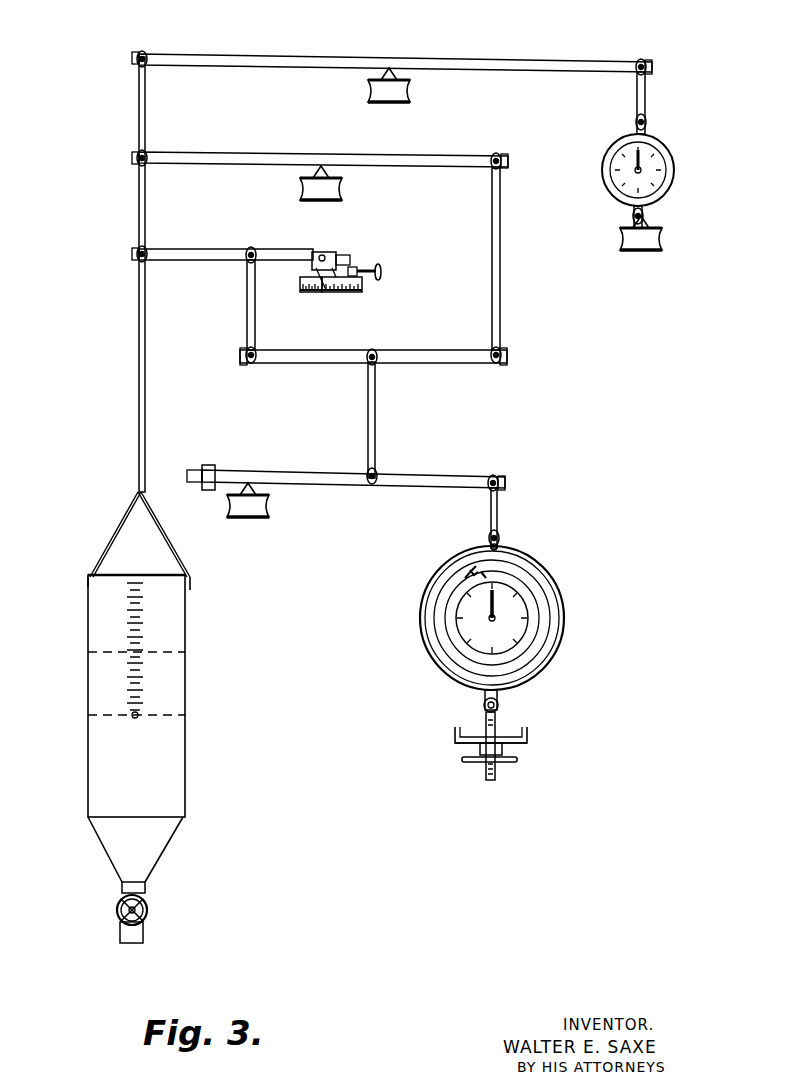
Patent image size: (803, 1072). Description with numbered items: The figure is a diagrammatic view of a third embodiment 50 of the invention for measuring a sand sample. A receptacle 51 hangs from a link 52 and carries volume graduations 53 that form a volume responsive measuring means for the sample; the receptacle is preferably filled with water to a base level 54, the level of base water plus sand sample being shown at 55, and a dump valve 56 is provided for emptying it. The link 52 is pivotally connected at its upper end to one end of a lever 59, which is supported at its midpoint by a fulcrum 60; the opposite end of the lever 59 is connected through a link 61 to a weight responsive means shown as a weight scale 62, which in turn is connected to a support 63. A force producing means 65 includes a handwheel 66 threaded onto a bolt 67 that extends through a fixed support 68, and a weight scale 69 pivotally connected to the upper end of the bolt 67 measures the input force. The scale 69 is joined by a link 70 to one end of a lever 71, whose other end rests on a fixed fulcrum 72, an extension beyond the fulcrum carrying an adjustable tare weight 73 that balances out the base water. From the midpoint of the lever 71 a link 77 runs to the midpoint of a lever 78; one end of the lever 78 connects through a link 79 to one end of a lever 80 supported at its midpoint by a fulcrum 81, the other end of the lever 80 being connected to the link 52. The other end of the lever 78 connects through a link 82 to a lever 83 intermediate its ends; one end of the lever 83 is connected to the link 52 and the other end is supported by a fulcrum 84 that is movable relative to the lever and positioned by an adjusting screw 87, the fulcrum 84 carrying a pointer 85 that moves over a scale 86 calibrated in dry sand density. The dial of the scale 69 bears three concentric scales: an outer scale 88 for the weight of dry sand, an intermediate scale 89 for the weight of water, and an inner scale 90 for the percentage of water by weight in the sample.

The embodiment 50 is at (512, 40).
The receptacle 51 is at (87, 621).
The link 52 is at (137, 385).
The volume graduations 53 is at (122, 676).
The base level 54 is at (168, 717).
The level of base water plus sand sample 55 is at (168, 653).
The dump valve 56 is at (148, 905).
The lever 59 is at (288, 56).
The fulcrum 60 is at (399, 70).
The link 61 is at (645, 100).
The weight scale 62 is at (676, 172).
The support 63 is at (664, 238).
The force producing means 65 is at (449, 764).
The handwheel 66 is at (512, 764).
The bolt 67 is at (488, 782).
The fixed support 68 is at (528, 733).
The weight scale 69 is at (562, 604).
The link 70 is at (498, 500).
The lever 71 is at (340, 486).
The fixed fulcrum 72 is at (252, 484).
The tare weight 73 is at (210, 465).
The link 77 is at (376, 420).
The lever 78 is at (455, 363).
The link 79 is at (500, 266).
The lever 80 is at (402, 154).
The fulcrum 81 is at (322, 170).
The link 82 is at (247, 308).
The lever 83 is at (180, 249).
The fulcrum 84 is at (318, 254).
The pointer 85 is at (335, 289).
The scale 86 is at (300, 286).
The adjusting screw 87 is at (365, 262).
The outer scale 88 is at (466, 566).
The intermediate scale 89 is at (471, 560).
The inner scale 90 is at (500, 545).